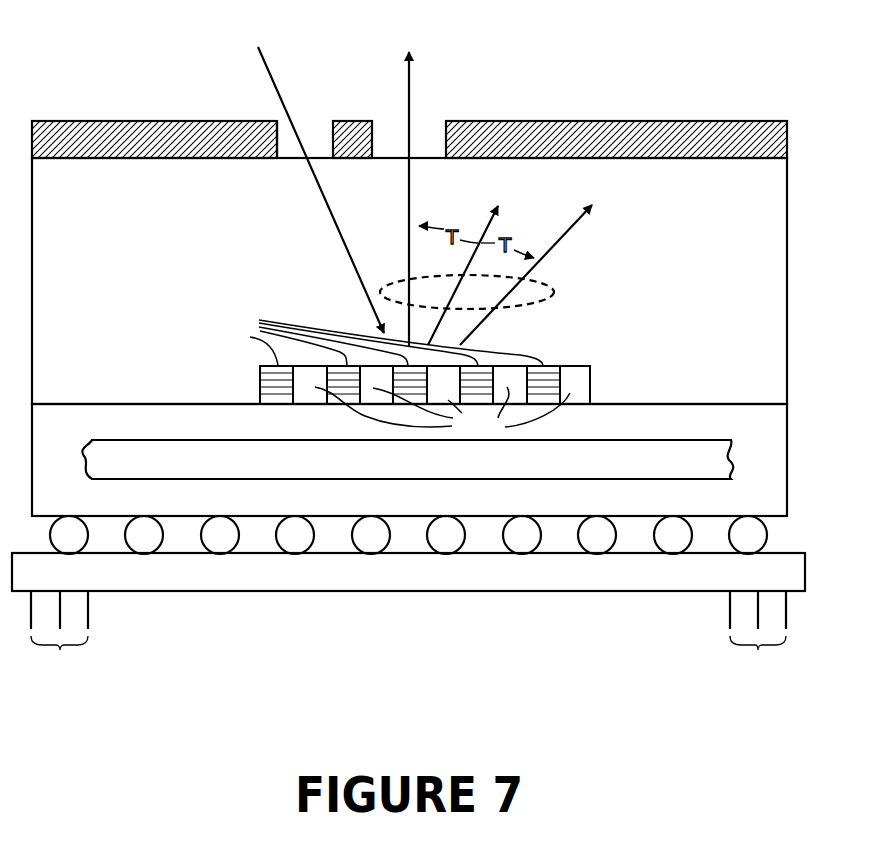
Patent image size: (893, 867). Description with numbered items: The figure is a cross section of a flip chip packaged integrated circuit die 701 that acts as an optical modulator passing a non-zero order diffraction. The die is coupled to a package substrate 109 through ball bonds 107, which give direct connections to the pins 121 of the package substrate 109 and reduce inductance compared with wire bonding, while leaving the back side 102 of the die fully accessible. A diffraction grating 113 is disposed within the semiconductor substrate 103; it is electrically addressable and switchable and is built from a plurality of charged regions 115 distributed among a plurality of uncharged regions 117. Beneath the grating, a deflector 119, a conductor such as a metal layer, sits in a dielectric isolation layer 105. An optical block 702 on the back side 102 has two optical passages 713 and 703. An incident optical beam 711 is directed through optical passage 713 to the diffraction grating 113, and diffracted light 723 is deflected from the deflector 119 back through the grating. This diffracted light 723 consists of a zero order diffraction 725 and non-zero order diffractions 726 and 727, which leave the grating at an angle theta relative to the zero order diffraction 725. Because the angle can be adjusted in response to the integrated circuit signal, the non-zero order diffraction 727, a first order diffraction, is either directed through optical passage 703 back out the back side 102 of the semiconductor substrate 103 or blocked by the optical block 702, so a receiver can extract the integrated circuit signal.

The back side 102 is at (158, 160).
The semiconductor substrate 103 is at (776, 233).
The dielectric isolation layer 105 is at (776, 420).
The ball bonds 107 is at (451, 544).
The package substrate 109 is at (797, 572).
The diffraction grating 113 is at (565, 353).
The charged regions 115 is at (380, 338).
The uncharged regions 117 is at (442, 412).
The deflector 119 is at (655, 454).
The pins 121 is at (408, 635).
The flip chip packaged integrated circuit die 701 is at (829, 53).
The optical block 702 is at (162, 121).
The optical passage 703 is at (418, 128).
The incident optical beam 711 is at (258, 57).
The optical passage 713 is at (278, 106).
The diffracted light 723 is at (558, 292).
The zero order diffraction 725 is at (507, 212).
The non-zero order diffraction 726 is at (600, 208).
The non-zero order diffraction 727 is at (420, 57).